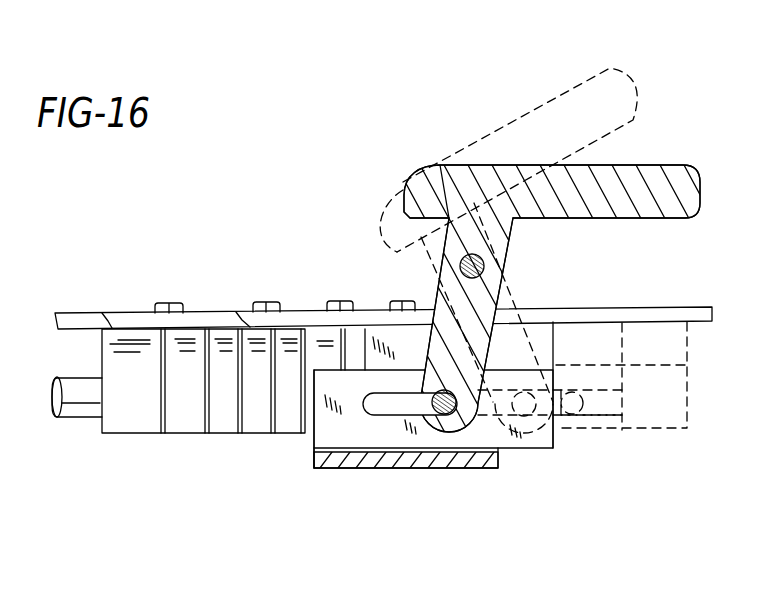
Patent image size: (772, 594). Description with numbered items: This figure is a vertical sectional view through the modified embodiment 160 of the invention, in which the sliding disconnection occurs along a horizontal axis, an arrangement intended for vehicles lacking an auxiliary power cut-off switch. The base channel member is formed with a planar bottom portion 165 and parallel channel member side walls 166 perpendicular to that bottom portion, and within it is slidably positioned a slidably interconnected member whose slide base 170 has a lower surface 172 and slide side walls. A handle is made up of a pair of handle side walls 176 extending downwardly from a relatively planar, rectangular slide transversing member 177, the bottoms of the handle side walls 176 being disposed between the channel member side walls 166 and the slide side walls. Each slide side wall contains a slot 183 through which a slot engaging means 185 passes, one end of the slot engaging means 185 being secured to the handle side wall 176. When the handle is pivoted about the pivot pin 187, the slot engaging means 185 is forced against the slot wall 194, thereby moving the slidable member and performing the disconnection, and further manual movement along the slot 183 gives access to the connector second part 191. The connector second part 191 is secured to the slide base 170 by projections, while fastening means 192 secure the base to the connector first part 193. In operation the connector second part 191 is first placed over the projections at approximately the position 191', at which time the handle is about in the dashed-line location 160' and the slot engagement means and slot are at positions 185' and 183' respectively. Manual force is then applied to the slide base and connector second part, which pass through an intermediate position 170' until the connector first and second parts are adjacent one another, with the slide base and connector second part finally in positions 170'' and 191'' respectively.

The modified embodiment 160 is at (524, 233).
The handle dashed-line location 160' is at (504, 240).
The planar bottom portion 165 is at (385, 462).
The channel member side walls 166 is at (500, 451).
The slide base 170 is at (388, 435).
The slide base position 170' is at (653, 376).
The slide base final position 170'' is at (660, 377).
The lower surface 172 is at (313, 470).
The handle side walls 176 is at (486, 204).
The slide transversing member 177 is at (640, 165).
The slot 183 is at (495, 483).
The slot initial position 183' is at (616, 438).
The slot engaging means 185 is at (457, 481).
The slot engagement means initial position 185' is at (631, 457).
The pivot pin 187 is at (486, 267).
The connector second part 191 is at (569, 302).
The connector second part initial position 191' is at (683, 303).
The connector second part final position 191'' is at (651, 287).
The fastening means 192 is at (173, 303).
The connector first part 193 is at (180, 408).
The slot wall 194 is at (456, 404).